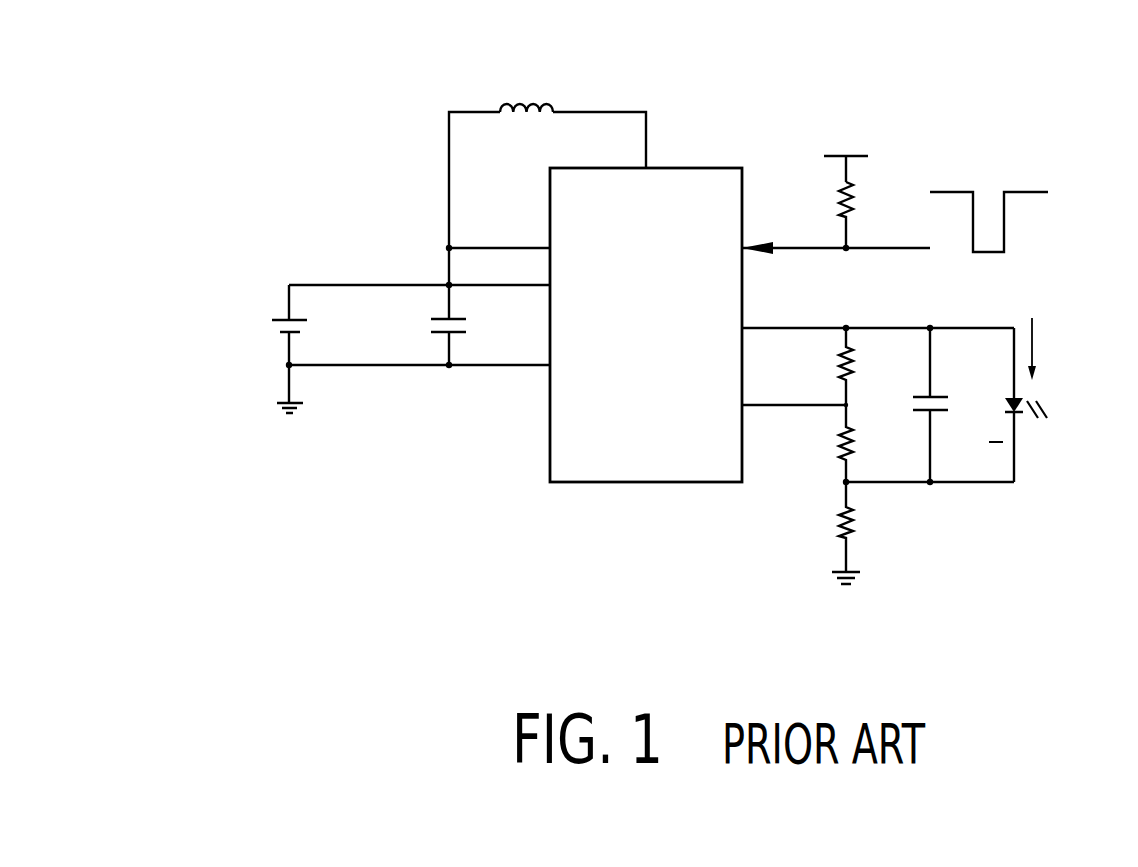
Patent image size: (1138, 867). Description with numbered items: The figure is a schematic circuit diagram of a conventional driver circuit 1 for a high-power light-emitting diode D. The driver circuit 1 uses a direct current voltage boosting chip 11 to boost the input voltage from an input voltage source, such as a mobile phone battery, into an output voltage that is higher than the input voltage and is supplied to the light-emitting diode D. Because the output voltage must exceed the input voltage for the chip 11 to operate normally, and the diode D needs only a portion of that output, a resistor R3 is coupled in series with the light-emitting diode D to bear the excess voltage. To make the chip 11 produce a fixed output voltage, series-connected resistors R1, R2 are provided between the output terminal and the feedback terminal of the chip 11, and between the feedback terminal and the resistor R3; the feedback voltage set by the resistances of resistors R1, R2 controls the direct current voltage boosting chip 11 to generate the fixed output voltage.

The driver circuit 1 is at (940, 120).
The direct current voltage boosting chip 11 is at (710, 185).
The resistor R1 is at (865, 366).
The resistor R2 is at (865, 443).
The resistor R3 is at (865, 527).
The light-emitting diode D is at (1036, 405).